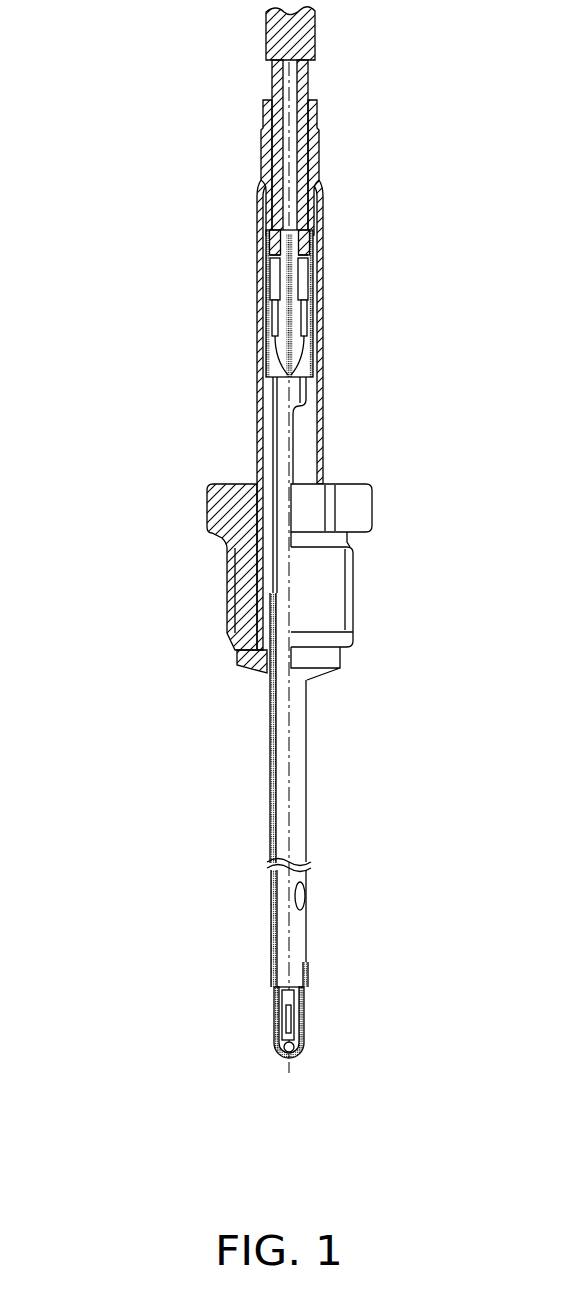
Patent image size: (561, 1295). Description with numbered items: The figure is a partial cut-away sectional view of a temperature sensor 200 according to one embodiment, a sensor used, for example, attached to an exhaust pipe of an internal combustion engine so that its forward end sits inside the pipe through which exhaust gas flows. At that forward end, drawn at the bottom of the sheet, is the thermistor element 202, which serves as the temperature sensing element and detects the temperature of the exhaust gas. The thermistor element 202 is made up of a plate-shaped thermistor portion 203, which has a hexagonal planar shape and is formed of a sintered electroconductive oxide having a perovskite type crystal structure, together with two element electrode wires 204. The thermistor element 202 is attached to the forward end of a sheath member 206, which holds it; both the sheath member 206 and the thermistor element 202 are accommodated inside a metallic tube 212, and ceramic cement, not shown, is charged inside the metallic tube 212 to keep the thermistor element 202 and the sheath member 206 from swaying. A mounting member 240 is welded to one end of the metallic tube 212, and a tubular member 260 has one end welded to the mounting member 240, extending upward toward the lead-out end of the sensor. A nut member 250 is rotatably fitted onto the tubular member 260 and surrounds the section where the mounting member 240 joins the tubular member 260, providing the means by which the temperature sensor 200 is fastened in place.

The temperature sensor 200 is at (134, 39).
The thermistor element 202 is at (192, 1017).
The thermistor portion 203 is at (280, 1050).
The element electrode wires 204 is at (283, 1021).
The sheath member 206 is at (278, 946).
The metallic tube 212 is at (270, 759).
The mounting member 240 is at (255, 667).
The nut member 250 is at (373, 506).
The tubular member 260 is at (257, 399).